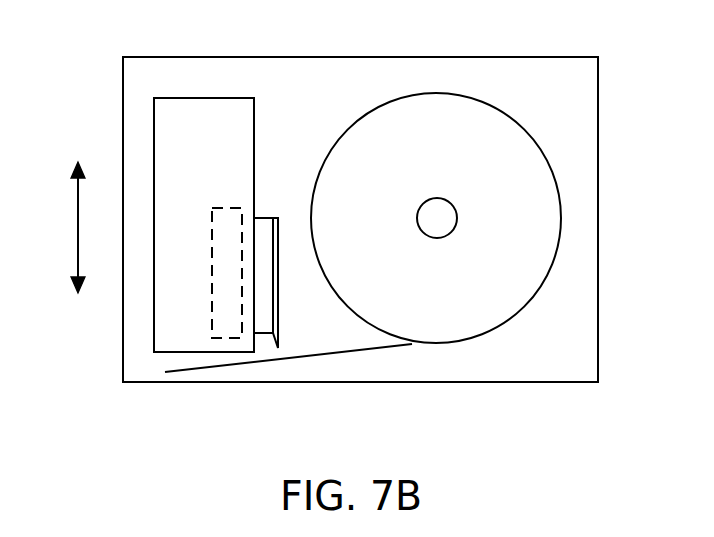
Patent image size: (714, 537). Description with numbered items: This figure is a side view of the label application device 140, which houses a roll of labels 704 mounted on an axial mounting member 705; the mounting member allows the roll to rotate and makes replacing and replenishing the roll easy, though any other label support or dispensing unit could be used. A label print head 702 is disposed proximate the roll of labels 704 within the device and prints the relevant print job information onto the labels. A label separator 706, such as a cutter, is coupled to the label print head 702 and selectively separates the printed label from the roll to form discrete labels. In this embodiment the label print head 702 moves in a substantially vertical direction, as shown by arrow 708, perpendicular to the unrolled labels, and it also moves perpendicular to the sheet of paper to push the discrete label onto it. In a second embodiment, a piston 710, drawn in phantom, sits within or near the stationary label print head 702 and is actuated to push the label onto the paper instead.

The label application device 140 is at (598, 88).
The label print head 702 is at (226, 98).
The roll of labels 704 is at (363, 232).
The axial mounting member 705 is at (441, 232).
The label separator 706 is at (282, 235).
The arrow 708 is at (78, 238).
The piston 710 is at (229, 218).